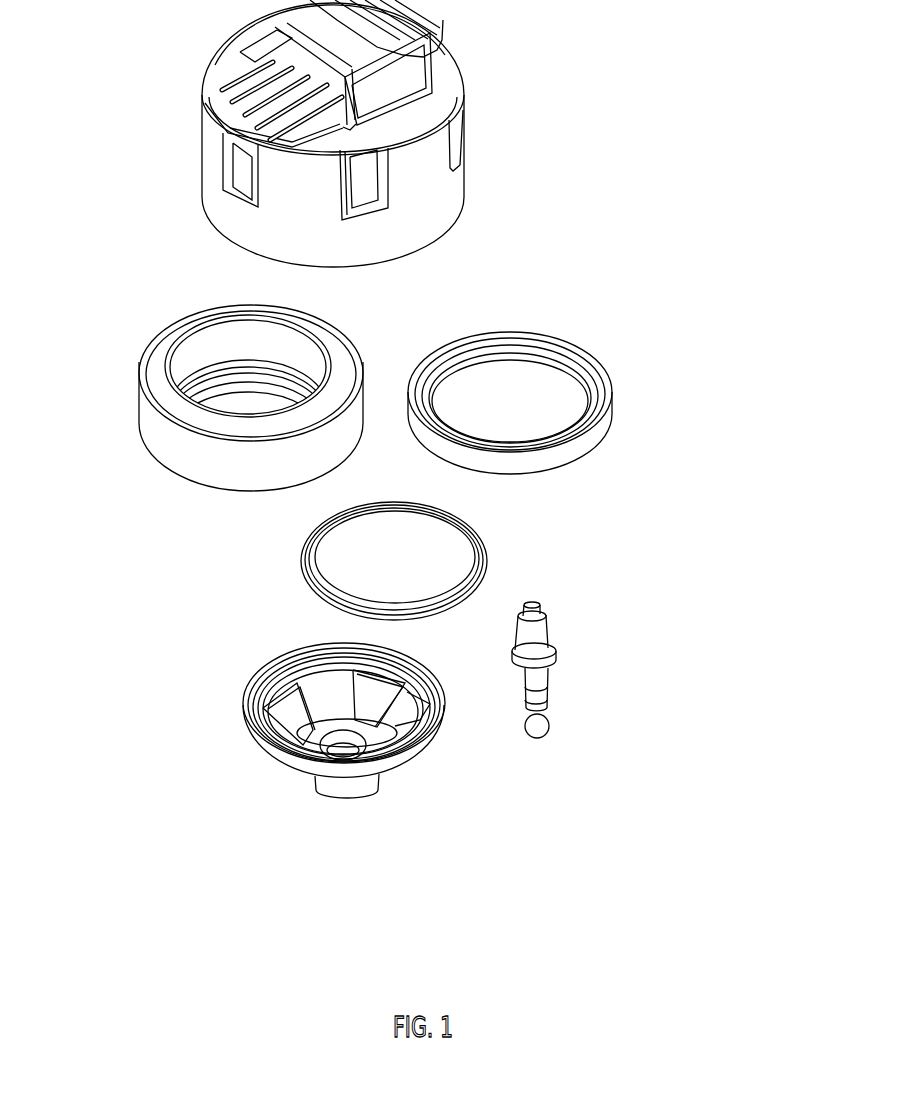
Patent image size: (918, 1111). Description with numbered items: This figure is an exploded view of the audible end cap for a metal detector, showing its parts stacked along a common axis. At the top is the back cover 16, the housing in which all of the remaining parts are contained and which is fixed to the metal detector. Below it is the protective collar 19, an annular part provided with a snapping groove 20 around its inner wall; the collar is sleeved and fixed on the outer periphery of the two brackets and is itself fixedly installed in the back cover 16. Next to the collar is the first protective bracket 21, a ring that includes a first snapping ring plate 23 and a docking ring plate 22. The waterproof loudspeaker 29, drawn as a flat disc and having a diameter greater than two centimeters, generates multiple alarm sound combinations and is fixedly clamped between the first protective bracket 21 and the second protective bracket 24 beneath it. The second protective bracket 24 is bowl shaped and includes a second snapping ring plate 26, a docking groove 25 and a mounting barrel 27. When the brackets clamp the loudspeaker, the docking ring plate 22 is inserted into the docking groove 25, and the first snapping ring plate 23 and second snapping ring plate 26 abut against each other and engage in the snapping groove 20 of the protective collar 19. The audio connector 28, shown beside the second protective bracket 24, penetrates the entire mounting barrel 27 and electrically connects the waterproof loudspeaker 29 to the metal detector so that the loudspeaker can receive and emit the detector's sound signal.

The back cover 16 is at (377, 153).
The protective collar 19 is at (202, 398).
The snapping groove 20 is at (250, 348).
The first protective bracket 21 is at (605, 412).
The docking ring plate 22 is at (543, 472).
The first snapping ring plate 23 is at (608, 403).
The second protective bracket 24 is at (271, 724).
The docking groove 25 is at (250, 685).
The second snapping ring plate 26 is at (263, 747).
The mounting barrel 27 is at (323, 789).
The audio connector 28 is at (547, 647).
The waterproof loudspeaker 29 is at (428, 542).